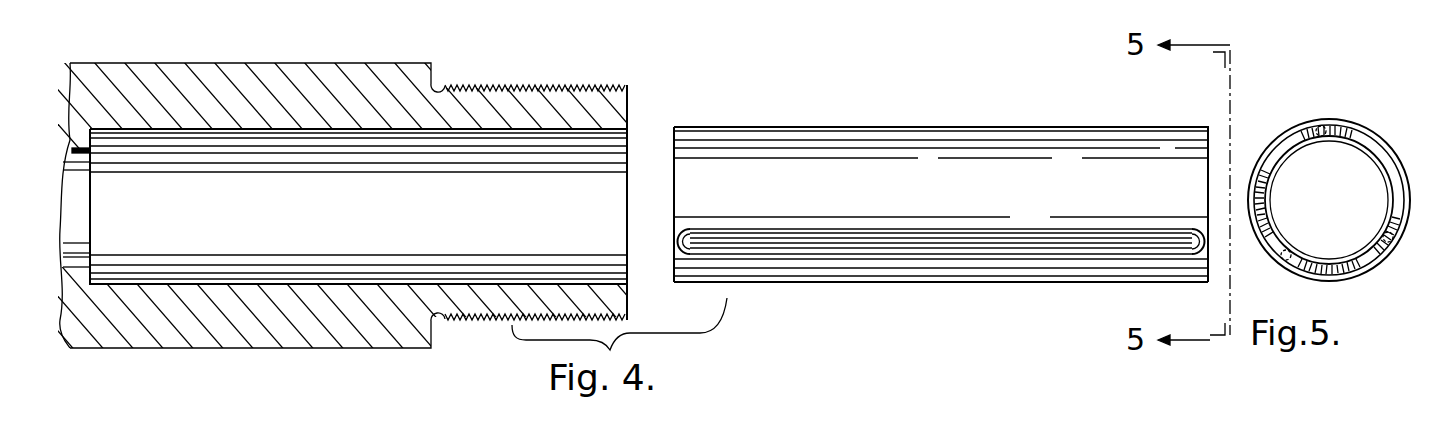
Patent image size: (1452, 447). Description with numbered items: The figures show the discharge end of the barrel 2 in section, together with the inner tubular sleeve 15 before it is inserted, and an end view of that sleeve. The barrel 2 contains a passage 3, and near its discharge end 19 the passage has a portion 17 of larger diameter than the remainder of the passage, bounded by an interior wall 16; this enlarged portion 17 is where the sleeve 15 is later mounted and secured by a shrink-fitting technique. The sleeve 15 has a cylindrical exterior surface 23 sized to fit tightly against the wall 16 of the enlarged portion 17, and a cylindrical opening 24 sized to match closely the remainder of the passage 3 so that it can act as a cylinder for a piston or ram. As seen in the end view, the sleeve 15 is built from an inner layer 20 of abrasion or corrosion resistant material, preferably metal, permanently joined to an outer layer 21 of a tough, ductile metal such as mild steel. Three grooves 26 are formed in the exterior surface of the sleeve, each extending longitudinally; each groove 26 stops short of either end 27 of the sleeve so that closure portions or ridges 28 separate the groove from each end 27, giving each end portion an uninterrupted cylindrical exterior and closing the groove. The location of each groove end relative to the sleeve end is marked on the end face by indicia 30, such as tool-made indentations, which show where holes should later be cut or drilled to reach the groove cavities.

In FIG. 4, the barrel 2 is at (170, 56).
In FIG. 4, the passage 3 is at (88, 152).
In FIG. 4, the inner tubular sleeve 15 is at (954, 126).
In FIG. 5, the inner tubular sleeve 15 is at (1365, 284).
In FIG. 4, the interior wall 16 is at (262, 138).
In FIG. 4, the passage portion 17 is at (460, 180).
In FIG. 4, the discharge end 19 is at (358, 82).
In FIG. 5, the inner layer 20 is at (1392, 183).
In FIG. 5, the outer layer 21 is at (1387, 155).
In FIG. 4, the cylindrical exterior surface 23 is at (826, 100).
In FIG. 5, the cylindrical opening 24 is at (1270, 198).
In FIG. 4, the grooves 26 is at (918, 240).
In FIG. 5, the grooves 26 is at (1305, 124).
In FIG. 4, the end 27 is at (673, 143).
In FIG. 4, the closure portions 28 is at (678, 256).
In FIG. 5, the closure portions 28 is at (1336, 125).
In FIG. 5, the indicia 30 is at (1321, 128).